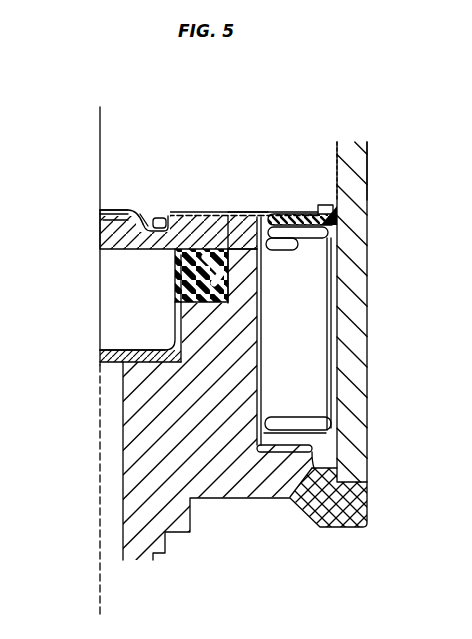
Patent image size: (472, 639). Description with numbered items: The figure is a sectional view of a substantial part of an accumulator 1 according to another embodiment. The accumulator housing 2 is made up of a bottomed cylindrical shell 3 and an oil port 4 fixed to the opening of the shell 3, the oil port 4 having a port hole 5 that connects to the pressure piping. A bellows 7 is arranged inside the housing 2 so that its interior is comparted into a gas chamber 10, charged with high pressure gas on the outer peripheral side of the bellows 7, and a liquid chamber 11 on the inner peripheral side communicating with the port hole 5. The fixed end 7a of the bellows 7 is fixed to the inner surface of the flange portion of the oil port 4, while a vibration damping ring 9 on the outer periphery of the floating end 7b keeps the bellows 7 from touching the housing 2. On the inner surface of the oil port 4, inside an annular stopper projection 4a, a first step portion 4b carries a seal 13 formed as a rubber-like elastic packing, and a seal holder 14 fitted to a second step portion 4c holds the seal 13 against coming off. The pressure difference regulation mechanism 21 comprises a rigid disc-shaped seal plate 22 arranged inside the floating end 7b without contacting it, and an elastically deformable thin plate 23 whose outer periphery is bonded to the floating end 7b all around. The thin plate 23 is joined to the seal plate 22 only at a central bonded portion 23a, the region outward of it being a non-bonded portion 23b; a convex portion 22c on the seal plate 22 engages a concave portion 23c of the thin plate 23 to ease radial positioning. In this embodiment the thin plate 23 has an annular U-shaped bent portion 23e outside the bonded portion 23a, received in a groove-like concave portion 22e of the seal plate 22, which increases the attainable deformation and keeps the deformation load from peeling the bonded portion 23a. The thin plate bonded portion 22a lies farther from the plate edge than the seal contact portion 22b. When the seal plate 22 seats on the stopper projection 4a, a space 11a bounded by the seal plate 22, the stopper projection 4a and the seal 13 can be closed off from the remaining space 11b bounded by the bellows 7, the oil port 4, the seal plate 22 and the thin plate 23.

The accumulator 1 is at (93, 191).
The accumulator housing 2 is at (357, 148).
The shell 3 is at (361, 170).
The oil port 4 is at (213, 480).
The stopper projection 4a is at (222, 268).
The first step portion 4b is at (300, 342).
The second step portion 4c is at (300, 435).
The port hole 5 is at (108, 546).
The bellows 7 is at (340, 355).
The fixed end 7a is at (346, 528).
The floating end 7b is at (307, 199).
The vibration damping ring 9 is at (333, 218).
The gas chamber 10 is at (229, 131).
The liquid chamber 11 is at (332, 400).
The space 11a is at (245, 300).
The space 11b is at (298, 237).
The seal 13 is at (172, 303).
The seal holder 14 is at (108, 360).
The pressure difference regulation mechanism 21 is at (98, 230).
The seal plate 22 is at (128, 250).
The thin plate bonded portion 22a is at (159, 218).
The seal contact portion 22b is at (230, 215).
The convex portion 22c is at (149, 226).
The groove-like concave portion 22e is at (174, 282).
The thin plate 23 is at (294, 213).
The bonded portion 23a is at (146, 214).
The non-bonded portion 23b is at (246, 216).
The concave portion 23c is at (100, 212).
The bent portion 23e is at (172, 256).